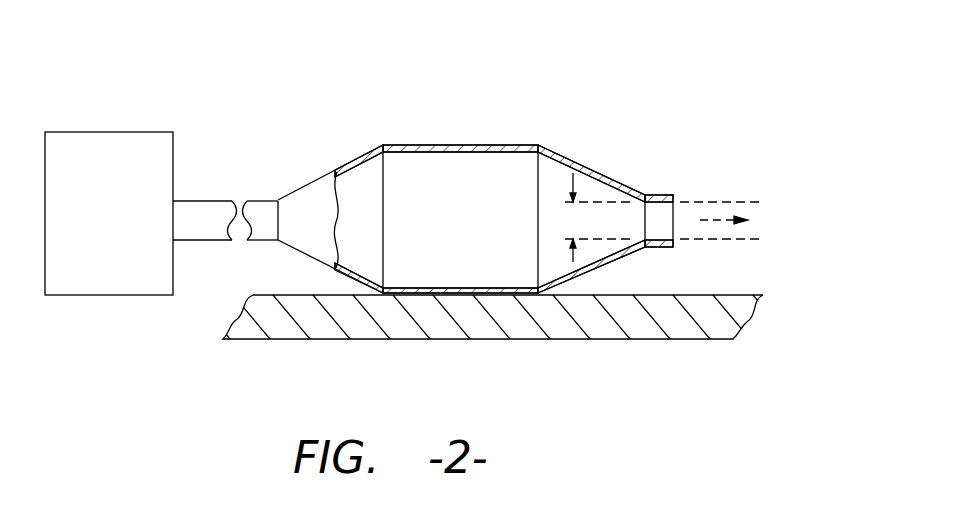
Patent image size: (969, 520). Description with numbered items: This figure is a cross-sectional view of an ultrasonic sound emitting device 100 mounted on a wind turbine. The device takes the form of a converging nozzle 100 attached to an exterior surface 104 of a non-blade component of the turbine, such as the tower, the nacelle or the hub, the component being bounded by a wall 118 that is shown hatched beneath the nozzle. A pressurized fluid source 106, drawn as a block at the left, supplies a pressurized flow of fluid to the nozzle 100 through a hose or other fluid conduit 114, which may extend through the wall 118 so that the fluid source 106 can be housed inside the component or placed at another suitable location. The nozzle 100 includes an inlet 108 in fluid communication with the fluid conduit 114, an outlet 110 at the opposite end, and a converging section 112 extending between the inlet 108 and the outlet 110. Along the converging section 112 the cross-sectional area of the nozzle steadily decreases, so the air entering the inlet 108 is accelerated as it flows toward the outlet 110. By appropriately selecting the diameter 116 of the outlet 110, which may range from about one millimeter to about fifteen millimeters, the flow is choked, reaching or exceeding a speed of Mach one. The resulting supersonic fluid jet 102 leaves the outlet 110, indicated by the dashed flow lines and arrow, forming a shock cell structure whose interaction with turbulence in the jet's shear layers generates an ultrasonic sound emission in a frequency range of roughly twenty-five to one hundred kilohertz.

The ultrasonic sound emitting device 100 is at (680, 51).
The fluid jet 102 is at (713, 198).
The exterior surface 104 is at (693, 295).
The pressurized fluid source 106 is at (127, 217).
The inlet 108 is at (382, 166).
The outlet 110 is at (676, 197).
The converging section 112 is at (596, 205).
The fluid conduit 114 is at (210, 213).
The diameter 116 is at (562, 166).
The wall 118 is at (641, 330).